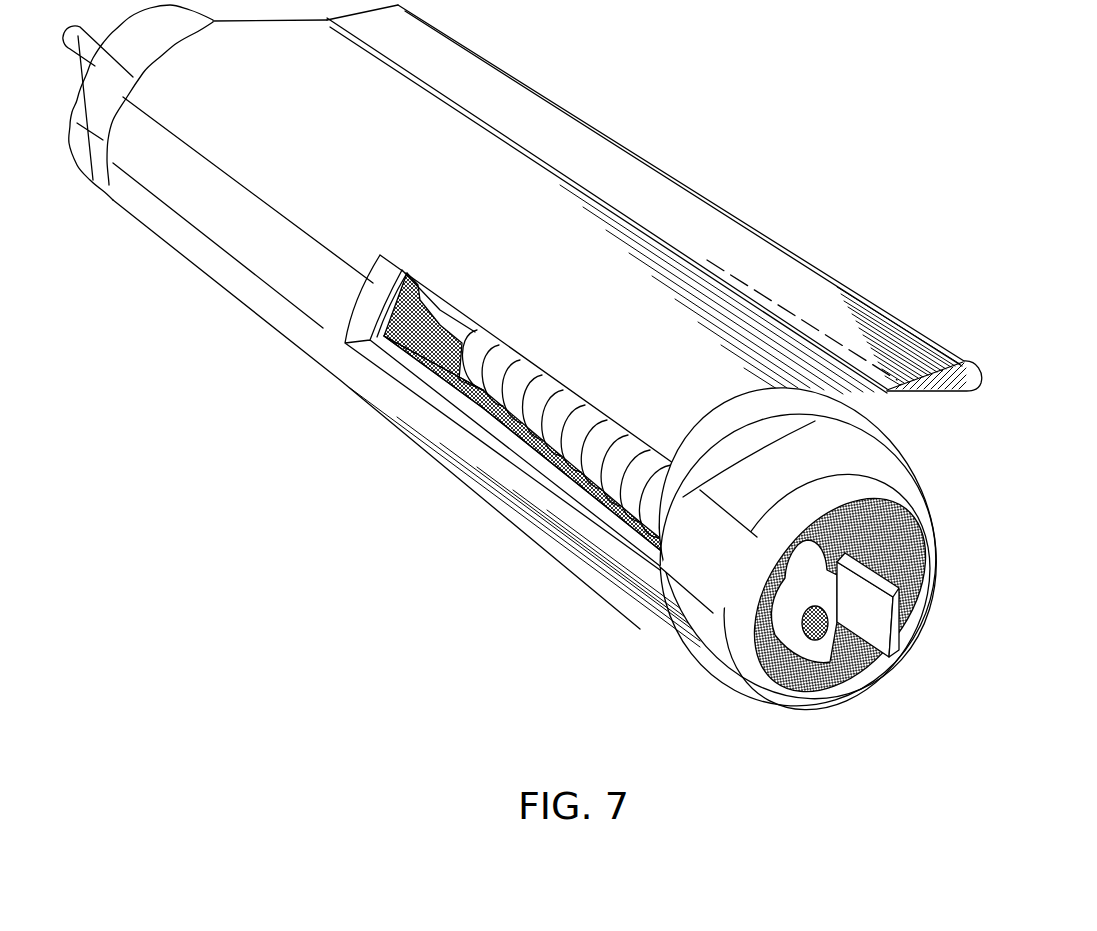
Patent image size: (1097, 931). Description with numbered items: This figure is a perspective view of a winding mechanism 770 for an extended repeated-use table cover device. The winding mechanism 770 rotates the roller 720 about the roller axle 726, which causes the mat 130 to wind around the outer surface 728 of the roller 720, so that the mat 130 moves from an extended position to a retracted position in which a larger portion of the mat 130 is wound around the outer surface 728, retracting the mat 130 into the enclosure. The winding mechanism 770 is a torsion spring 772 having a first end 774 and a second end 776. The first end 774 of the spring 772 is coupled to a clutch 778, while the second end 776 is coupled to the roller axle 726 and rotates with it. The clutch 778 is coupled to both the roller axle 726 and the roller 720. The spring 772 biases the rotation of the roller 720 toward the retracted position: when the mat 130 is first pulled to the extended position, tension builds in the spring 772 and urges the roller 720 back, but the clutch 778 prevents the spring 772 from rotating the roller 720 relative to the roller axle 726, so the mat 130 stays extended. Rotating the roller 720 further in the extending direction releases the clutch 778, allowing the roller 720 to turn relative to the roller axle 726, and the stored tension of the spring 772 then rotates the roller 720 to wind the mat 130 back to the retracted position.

The mat 130 is at (657, 197).
The roller 720 is at (880, 447).
The roller axle 726 is at (900, 648).
The outer surface 728 is at (688, 610).
The winding mechanism 770 is at (975, 521).
The torsion spring 772 is at (592, 460).
The first end 774 is at (696, 480).
The second end 776 is at (464, 333).
The clutch 778 is at (787, 627).